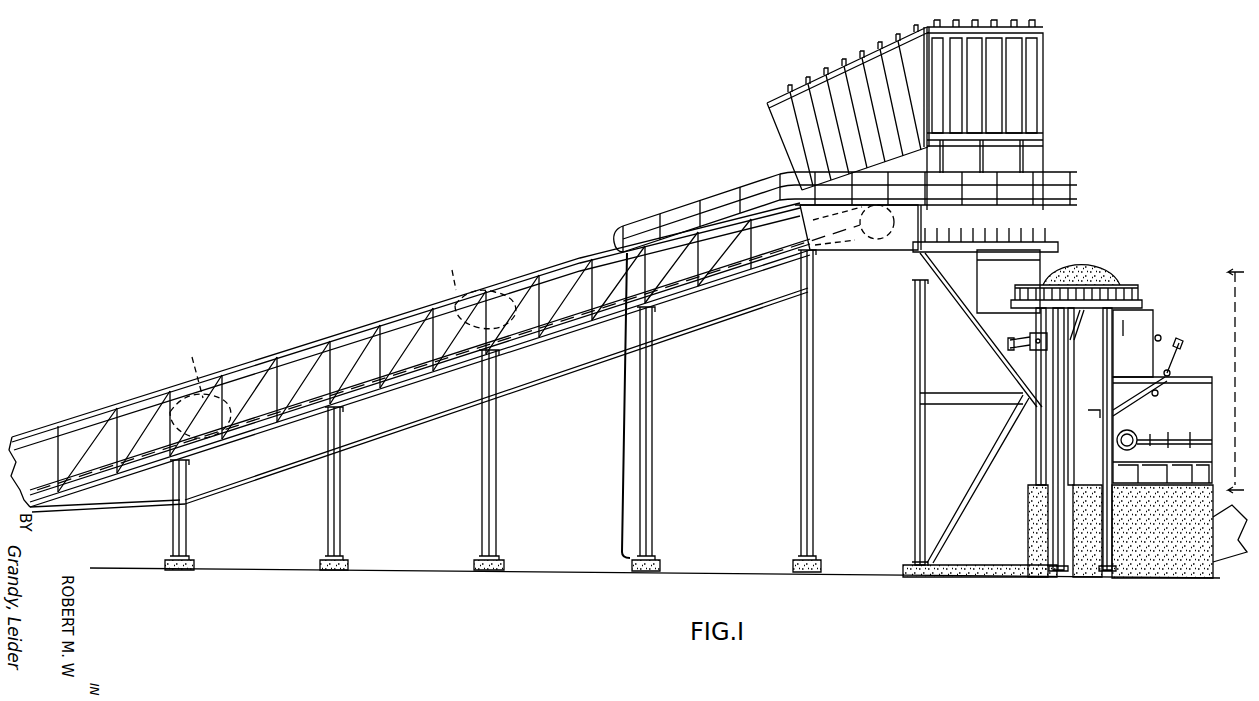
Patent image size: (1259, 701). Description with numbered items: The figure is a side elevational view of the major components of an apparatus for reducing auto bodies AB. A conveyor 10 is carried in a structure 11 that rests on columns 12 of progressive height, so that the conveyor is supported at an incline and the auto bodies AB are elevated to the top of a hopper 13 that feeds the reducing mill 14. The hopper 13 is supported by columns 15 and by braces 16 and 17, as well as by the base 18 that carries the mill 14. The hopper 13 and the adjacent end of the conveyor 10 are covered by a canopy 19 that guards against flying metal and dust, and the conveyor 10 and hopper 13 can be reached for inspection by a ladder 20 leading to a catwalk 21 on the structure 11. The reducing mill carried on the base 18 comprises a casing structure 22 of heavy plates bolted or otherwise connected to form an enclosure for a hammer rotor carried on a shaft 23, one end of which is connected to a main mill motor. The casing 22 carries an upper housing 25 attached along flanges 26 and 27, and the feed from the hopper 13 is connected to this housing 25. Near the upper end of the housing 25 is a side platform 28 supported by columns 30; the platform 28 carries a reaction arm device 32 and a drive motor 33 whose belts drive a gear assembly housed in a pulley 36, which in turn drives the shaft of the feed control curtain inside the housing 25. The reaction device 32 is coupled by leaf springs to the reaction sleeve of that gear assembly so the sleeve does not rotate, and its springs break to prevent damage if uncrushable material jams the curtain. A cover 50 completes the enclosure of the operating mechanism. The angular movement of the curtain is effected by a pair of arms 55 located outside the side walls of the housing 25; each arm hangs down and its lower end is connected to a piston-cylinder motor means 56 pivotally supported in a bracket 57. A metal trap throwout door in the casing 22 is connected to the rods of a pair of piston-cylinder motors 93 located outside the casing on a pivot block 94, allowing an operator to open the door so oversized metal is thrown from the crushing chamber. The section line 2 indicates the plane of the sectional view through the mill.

The section line 2- 2 is at (1239, 381).
The conveyor 10 is at (838, 260).
The structure 11 is at (336, 330).
The columns 12 is at (187, 538).
The hopper 13 is at (957, 282).
The reducing mill 14 is at (1144, 273).
The columns 15 is at (916, 378).
The brace 16 is at (970, 469).
The brace 17 is at (945, 404).
The base 18 is at (1157, 572).
The canopy 19 is at (843, 59).
The ladder 20 is at (621, 503).
The catwalk 21 is at (770, 182).
The casing structure 22 is at (1192, 405).
The shaft 23 is at (1143, 428).
The upper housing 25 is at (1143, 328).
The flange 26 is at (1127, 400).
The flange 27 is at (1093, 415).
The side platform 28 is at (1123, 320).
The columns 30 is at (1047, 535).
The reaction arm device 32 is at (1032, 280).
The drive motor 33 is at (1140, 288).
The pulley 36 is at (1082, 270).
The cover 50 is at (1110, 272).
The arms 55 is at (1080, 330).
The piston-cylinder motor means 56 is at (1023, 352).
The bracket 57 is at (1034, 336).
The piston-cylinder motors 93 is at (1178, 345).
The pivot block 94 is at (1170, 373).
The auto bodies AB is at (343, 341).